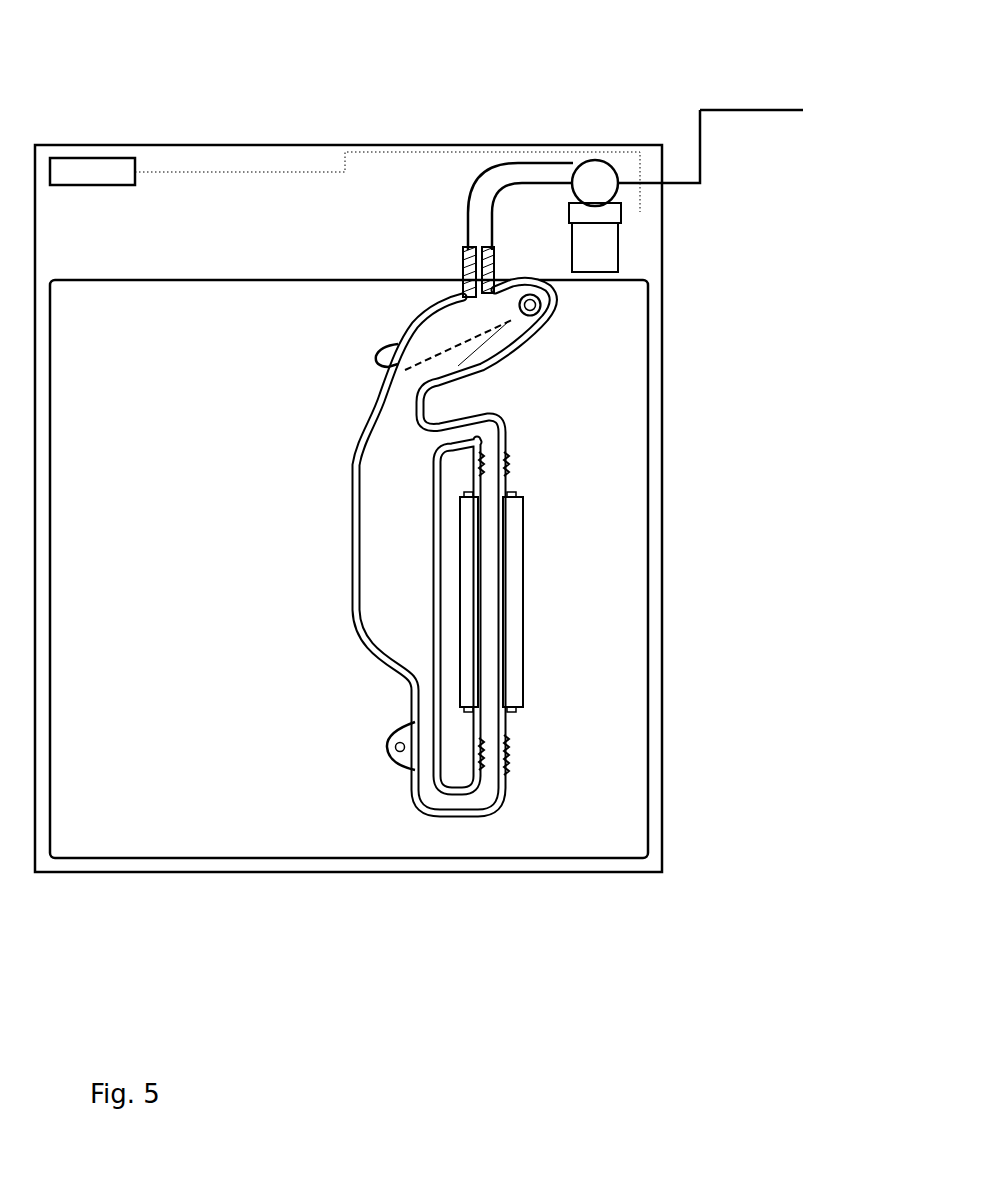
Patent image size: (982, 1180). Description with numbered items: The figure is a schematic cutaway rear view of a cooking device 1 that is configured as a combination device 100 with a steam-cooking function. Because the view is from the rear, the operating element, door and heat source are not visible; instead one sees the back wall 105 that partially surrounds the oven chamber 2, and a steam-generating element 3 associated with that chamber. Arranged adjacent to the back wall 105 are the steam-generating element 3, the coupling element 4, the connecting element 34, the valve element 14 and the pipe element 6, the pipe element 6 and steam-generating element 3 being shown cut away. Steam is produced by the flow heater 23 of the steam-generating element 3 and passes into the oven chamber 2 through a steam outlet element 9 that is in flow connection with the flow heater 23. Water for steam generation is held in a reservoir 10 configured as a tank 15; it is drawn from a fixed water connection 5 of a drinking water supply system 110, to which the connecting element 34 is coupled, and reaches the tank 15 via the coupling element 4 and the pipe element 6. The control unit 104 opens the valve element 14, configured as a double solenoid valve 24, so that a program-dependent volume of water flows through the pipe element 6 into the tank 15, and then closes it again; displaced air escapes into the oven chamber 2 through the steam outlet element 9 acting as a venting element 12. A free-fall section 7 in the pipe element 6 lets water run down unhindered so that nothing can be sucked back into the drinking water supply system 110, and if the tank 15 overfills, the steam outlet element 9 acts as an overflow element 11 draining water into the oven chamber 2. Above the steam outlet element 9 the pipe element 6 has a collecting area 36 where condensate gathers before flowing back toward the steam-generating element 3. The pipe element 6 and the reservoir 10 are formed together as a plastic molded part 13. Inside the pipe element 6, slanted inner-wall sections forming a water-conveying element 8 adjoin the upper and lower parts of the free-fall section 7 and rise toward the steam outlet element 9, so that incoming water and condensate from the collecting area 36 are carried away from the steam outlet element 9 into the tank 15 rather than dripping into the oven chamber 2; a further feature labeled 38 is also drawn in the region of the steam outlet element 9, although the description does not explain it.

The cooking device 1 is at (348, 437).
The combination device 100 is at (348, 508).
The oven chamber 2 is at (421, 640).
The steam-generating element 3 is at (421, 640).
The coupling element 4 is at (469, 160).
The fixed water connection 5 is at (698, 142).
The pipe element 6 is at (467, 247).
The free-fall section 7 is at (523, 345).
The water-conveying element 8 is at (478, 303).
The steam outlet element 9 is at (553, 304).
The reservoir 10 is at (346, 547).
The overflow element 11 is at (615, 344).
The venting element 12 is at (615, 344).
The molded part 13 is at (306, 493).
The valve element 14 is at (697, 237).
The tank 15 is at (400, 567).
The flow heater 23 is at (517, 568).
The double solenoid valve 24 is at (622, 218).
The connecting element 34 is at (597, 168).
The collecting area 36 is at (485, 193).
The seal 38 is at (495, 330).
The control unit 104 is at (100, 168).
The wall 105 is at (650, 690).
The drinking water supply system 110 is at (772, 107).